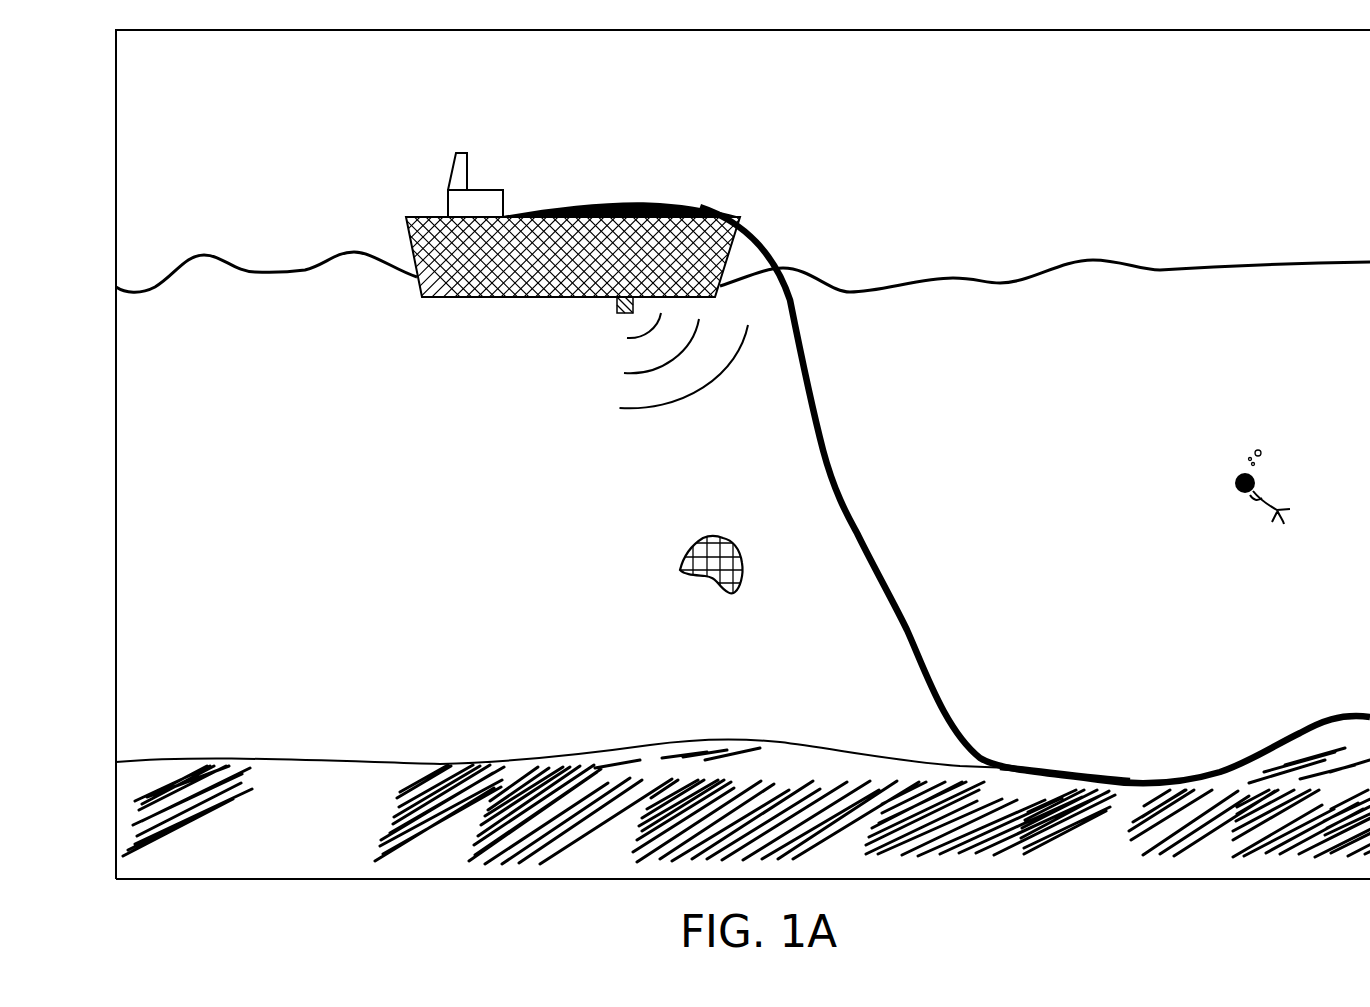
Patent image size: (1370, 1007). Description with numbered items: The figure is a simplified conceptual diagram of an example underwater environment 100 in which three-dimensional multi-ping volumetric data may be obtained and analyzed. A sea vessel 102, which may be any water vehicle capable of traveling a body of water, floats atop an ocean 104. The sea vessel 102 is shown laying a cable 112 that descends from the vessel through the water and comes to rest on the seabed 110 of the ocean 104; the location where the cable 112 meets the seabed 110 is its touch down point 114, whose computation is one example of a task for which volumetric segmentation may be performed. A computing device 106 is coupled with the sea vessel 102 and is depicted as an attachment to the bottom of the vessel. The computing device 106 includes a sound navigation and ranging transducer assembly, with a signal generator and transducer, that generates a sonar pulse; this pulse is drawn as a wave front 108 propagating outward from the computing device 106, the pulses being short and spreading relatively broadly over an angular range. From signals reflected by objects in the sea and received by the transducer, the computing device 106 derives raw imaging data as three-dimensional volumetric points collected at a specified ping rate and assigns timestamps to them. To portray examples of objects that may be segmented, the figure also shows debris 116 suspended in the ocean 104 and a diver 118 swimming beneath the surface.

The underwater environment 100 is at (165, 61).
The sea vessel 102 is at (410, 238).
The ocean 104 is at (1188, 265).
The computing device 106 is at (617, 306).
The wave front 108 is at (662, 408).
The seabed 110 is at (607, 750).
The cable 112 is at (857, 533).
The touch down point 114 is at (1017, 765).
The debris 116 is at (713, 543).
The diver 118 is at (1276, 523).